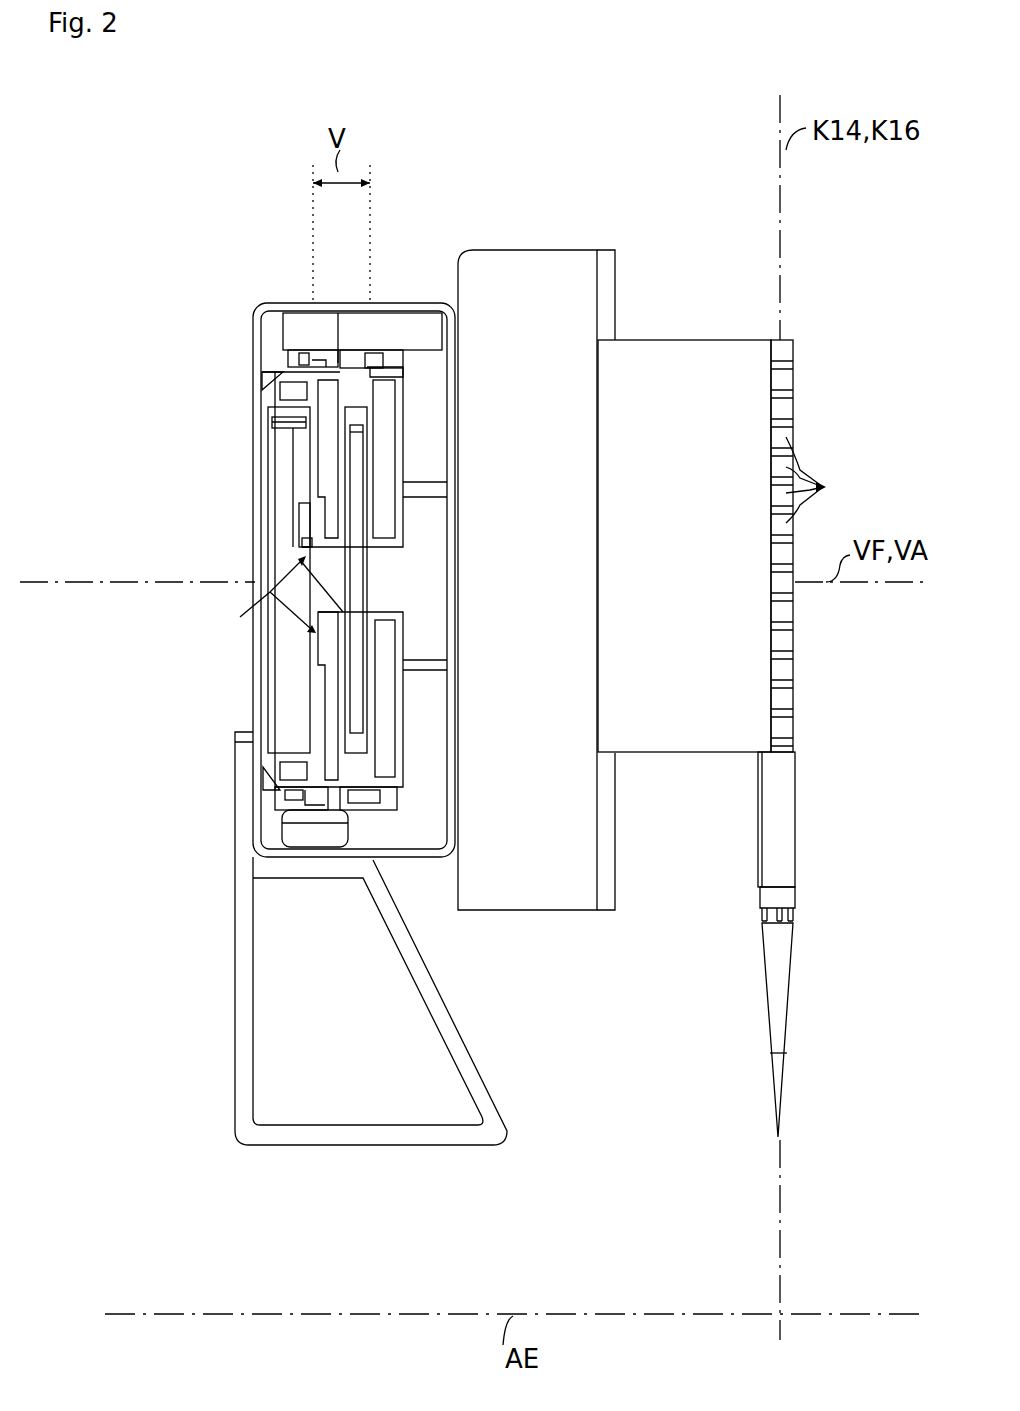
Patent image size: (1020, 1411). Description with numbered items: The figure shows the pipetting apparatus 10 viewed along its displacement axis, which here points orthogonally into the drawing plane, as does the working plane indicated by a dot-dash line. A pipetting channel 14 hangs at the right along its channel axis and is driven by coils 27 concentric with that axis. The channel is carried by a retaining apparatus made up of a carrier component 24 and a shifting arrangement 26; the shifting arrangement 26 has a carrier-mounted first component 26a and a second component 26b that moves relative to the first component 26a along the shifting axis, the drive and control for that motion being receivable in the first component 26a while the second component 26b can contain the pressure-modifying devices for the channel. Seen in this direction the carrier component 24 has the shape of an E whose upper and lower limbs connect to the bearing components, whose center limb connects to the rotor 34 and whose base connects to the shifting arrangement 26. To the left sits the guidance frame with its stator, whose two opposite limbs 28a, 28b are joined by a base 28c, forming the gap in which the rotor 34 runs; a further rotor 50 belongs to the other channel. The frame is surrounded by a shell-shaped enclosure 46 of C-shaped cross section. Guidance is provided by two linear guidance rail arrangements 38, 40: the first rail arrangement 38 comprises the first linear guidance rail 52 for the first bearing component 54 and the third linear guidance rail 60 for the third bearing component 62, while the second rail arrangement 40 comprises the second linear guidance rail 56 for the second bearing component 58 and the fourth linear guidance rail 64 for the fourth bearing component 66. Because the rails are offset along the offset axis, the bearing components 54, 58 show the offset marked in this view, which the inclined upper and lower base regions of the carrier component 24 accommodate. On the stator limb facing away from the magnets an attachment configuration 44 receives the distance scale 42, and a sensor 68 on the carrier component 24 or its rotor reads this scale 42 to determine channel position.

The pipetting apparatus 10 is at (455, 133).
The pipetting channel 14 is at (780, 843).
The carrier component 24 is at (410, 598).
The shifting arrangement 26 is at (611, 220).
The first component 26a is at (555, 597).
The second component 26b is at (696, 613).
The coils 27 is at (823, 480).
The limb 28a is at (328, 474).
The limb 28b is at (383, 472).
The base 28c is at (353, 393).
The rotor 34 is at (358, 450).
The linear guidance rail arrangement 38 is at (262, 340).
The linear guidance rail arrangement 40 is at (428, 912).
The distance scale 42 is at (308, 537).
The attachment configuration 44 is at (257, 597).
The enclosure 46 is at (260, 302).
The rotor 50 is at (357, 680).
The first linear guidance rail 52 is at (401, 373).
The first bearing component 54 is at (400, 352).
The second linear guidance rail 56 is at (263, 788).
The second bearing component 58 is at (296, 800).
The third linear guidance rail 60 is at (313, 363).
The third bearing component 62 is at (297, 360).
The fourth linear guidance rail 64 is at (373, 797).
The fourth bearing component 66 is at (428, 912).
The sensor 68 is at (303, 525).